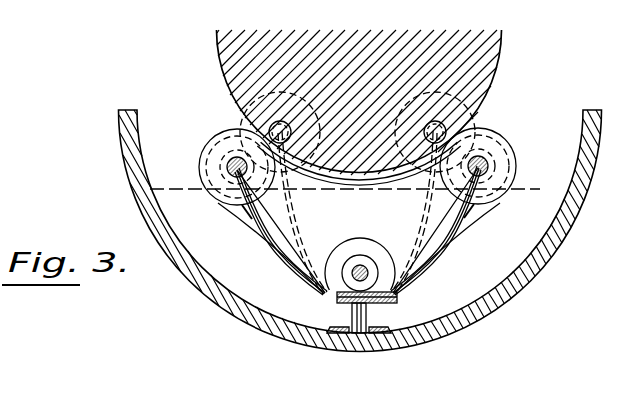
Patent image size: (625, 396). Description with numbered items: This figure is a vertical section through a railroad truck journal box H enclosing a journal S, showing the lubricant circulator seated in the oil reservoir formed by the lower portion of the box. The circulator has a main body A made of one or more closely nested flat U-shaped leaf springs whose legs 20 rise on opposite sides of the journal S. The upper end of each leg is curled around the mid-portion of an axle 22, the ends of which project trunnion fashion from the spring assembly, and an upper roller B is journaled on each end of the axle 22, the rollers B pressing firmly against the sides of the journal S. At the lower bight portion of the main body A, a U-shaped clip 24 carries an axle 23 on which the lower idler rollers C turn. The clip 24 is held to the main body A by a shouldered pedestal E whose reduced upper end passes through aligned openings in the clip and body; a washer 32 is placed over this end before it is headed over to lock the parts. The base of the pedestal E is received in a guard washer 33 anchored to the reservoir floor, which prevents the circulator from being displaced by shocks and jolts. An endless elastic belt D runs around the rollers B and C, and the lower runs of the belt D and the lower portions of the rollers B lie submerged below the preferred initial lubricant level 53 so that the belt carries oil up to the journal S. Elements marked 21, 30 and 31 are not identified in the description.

The journal S is at (494, 57).
The journal box H is at (550, 268).
The roller B is at (518, 146).
The endless elastic belt D is at (323, 182).
The idler roller C is at (391, 250).
The main body A is at (442, 272).
The shouldered pedestal E is at (368, 318).
The legs 20 is at (262, 229).
The shaft 21 is at (483, 166).
The axle 22 is at (228, 170).
The axle 23 is at (345, 264).
The U-shaped clip 24 is at (364, 262).
The stem 30 is at (352, 317).
The plate 31 is at (398, 298).
The washer 32 is at (337, 296).
The washer 33 is at (335, 336).
The initial level 53 is at (185, 186).